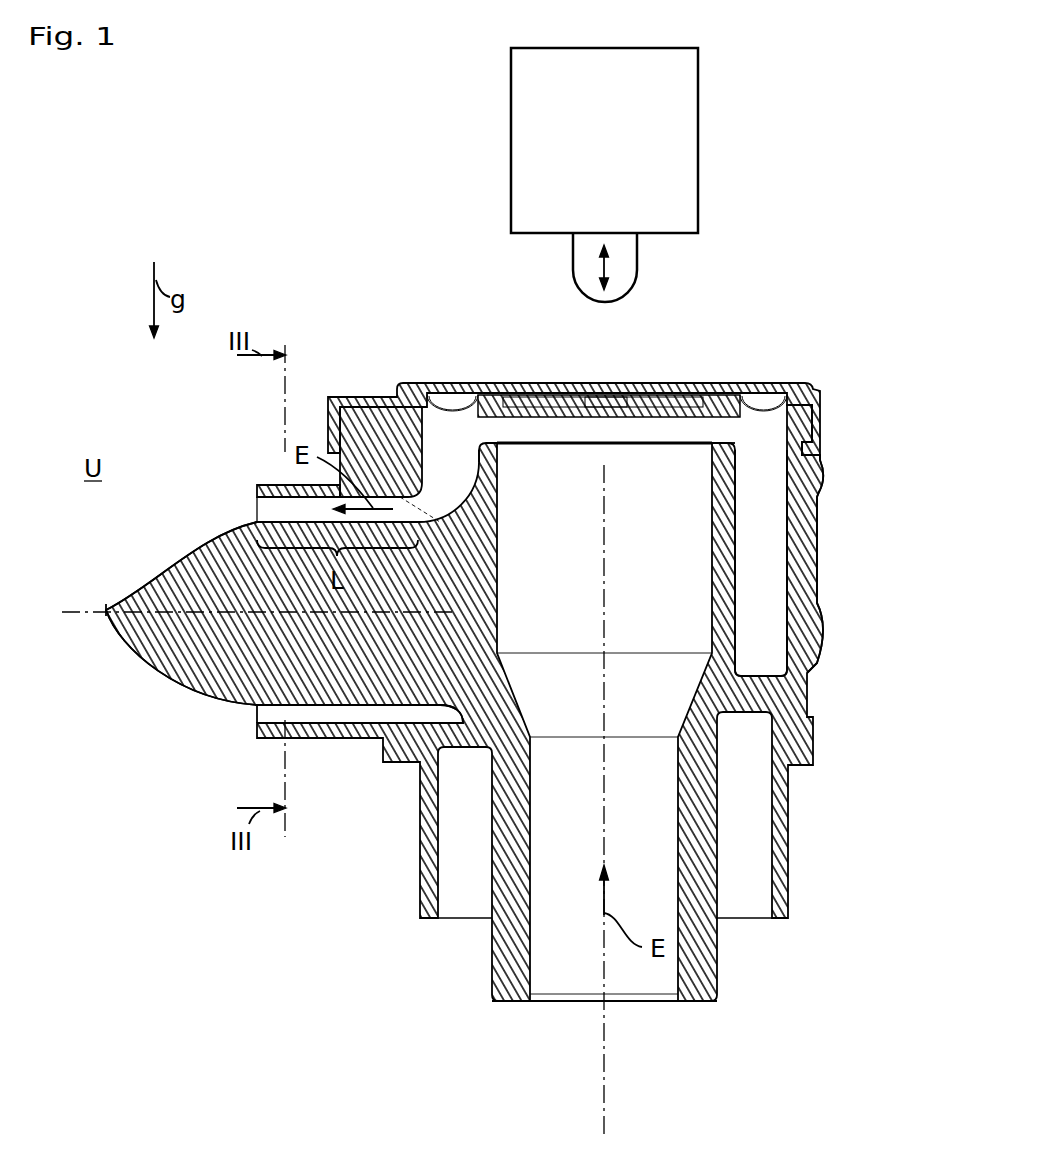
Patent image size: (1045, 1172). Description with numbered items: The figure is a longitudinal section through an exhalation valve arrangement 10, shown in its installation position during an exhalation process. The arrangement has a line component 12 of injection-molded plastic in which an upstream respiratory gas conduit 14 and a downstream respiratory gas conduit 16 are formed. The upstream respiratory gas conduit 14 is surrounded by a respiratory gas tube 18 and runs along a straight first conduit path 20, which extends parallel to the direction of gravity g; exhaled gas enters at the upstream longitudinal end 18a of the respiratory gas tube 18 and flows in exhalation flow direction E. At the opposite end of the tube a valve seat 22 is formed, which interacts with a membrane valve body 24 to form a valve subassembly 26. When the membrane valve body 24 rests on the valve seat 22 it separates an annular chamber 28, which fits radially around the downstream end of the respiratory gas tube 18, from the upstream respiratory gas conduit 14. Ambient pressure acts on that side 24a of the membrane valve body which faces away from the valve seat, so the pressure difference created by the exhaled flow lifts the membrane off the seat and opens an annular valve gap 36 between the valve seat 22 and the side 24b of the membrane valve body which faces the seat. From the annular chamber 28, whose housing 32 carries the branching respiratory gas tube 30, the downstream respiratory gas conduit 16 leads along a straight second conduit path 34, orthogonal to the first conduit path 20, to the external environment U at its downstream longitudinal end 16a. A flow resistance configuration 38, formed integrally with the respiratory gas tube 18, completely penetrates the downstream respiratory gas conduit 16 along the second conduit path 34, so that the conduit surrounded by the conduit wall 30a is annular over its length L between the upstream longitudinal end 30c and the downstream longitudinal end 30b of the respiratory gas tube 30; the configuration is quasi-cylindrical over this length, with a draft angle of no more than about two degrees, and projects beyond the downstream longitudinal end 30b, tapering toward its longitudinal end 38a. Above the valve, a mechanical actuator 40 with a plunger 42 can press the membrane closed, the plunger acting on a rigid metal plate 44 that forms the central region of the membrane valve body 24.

The exhalation valve arrangement 10 is at (371, 234).
The line component 12 is at (798, 936).
The upstream respiratory gas conduit 14 is at (658, 823).
The downstream respiratory gas conduit 16 is at (253, 712).
The downstream longitudinal end 16a is at (290, 707).
The respiratory gas tube 18 is at (703, 943).
The upstream longitudinal end 18a is at (722, 434).
The first conduit path 20 is at (606, 1073).
The valve seat 22 is at (796, 503).
The membrane valve body 24 is at (752, 350).
The side of the membrane valve body facing away from the valve seat 24a is at (487, 392).
The side of the membrane valve body facing toward the valve seat 24b is at (567, 420).
The valve subassembly 26 is at (836, 348).
The annular chamber 28 is at (774, 568).
The respiratory gas tube 30 is at (290, 487).
The conduit wall 30a is at (280, 499).
The downstream longitudinal end 30b is at (257, 492).
The upstream longitudinal end 30c is at (416, 496).
The housing 32 is at (808, 580).
The second conduit path 34 is at (97, 616).
The annular valve gap 36 is at (476, 428).
The flow resistance configuration 38 is at (150, 684).
The longitudinal end 38a is at (105, 611).
The mechanical actuator 40 is at (616, 150).
The plunger 42 is at (627, 258).
The rigid plate 44 is at (550, 394).